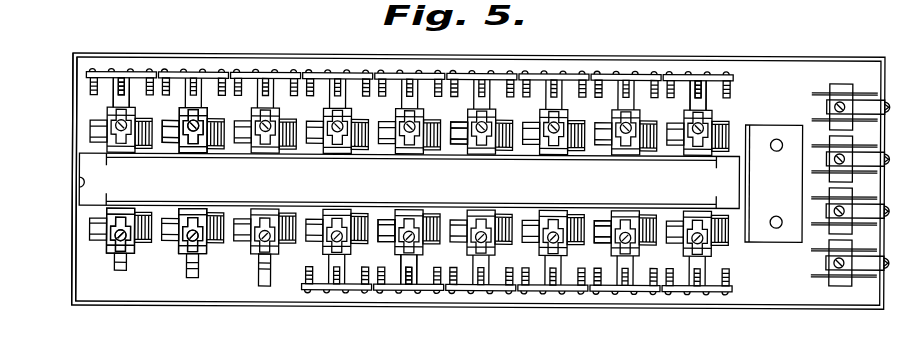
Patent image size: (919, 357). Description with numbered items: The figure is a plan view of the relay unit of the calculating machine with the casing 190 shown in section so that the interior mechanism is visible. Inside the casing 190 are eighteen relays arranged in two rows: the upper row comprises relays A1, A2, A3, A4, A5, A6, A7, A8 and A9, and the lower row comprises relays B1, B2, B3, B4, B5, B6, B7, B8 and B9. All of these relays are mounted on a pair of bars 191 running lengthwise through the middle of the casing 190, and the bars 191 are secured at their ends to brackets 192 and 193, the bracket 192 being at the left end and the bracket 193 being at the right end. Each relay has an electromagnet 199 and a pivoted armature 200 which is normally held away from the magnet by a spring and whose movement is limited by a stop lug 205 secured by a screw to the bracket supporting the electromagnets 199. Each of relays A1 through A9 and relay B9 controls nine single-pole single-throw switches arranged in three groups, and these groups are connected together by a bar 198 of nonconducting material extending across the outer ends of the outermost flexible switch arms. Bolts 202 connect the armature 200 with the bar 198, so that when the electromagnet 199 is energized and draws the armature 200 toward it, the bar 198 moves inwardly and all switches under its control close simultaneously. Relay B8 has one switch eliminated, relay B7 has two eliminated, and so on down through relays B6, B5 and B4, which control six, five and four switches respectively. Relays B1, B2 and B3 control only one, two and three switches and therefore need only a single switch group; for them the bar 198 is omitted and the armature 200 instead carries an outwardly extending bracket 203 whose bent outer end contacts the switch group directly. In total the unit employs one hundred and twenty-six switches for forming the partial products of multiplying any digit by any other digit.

The casing 190 is at (108, 50).
The bars 191 is at (297, 158).
The bracket 192 is at (83, 183).
The bracket 193 is at (751, 157).
The bar 198 is at (247, 71).
The electromagnet 199 is at (171, 145).
The armature 200 is at (252, 113).
The bolts 202 is at (184, 97).
The bracket 203 is at (128, 271).
The stop lug 205 is at (329, 99).
The relay A1 is at (114, 148).
The relay A2 is at (186, 148).
The relay A3 is at (258, 148).
The relay A4 is at (330, 148).
The relay A5 is at (402, 148).
The relay A6 is at (474, 148).
The relay A7 is at (546, 148).
The relay A8 is at (618, 148).
The relay A9 is at (690, 148).
The relay B1 is at (110, 208).
The relay B2 is at (203, 209).
The relay B3 is at (275, 209).
The relay B4 is at (347, 209).
The relay B5 is at (399, 208).
The relay B6 is at (471, 208).
The relay B7 is at (543, 208).
The relay B8 is at (635, 209).
The relay B9 is at (687, 208).